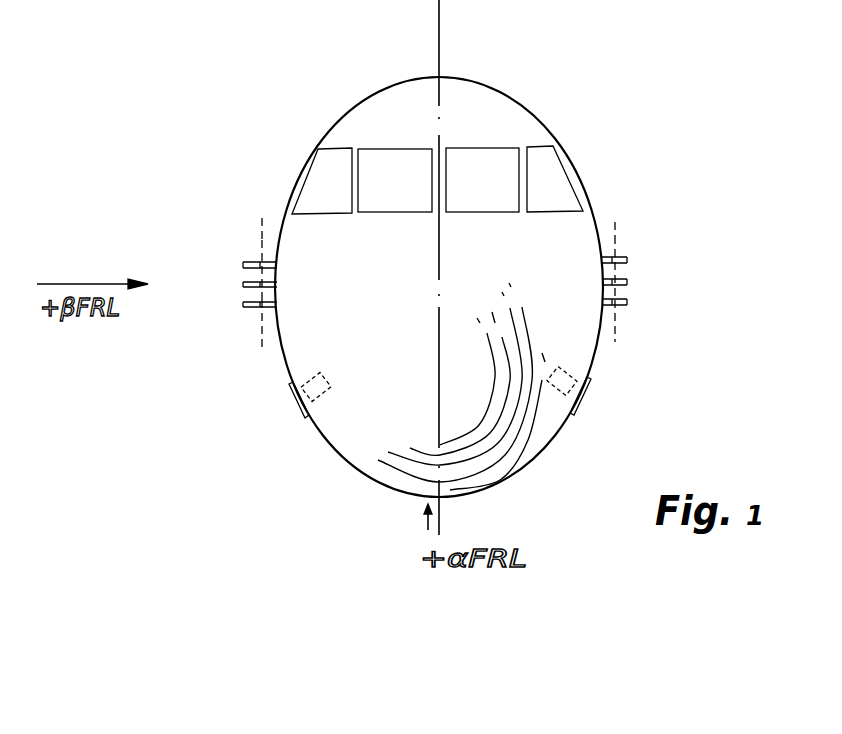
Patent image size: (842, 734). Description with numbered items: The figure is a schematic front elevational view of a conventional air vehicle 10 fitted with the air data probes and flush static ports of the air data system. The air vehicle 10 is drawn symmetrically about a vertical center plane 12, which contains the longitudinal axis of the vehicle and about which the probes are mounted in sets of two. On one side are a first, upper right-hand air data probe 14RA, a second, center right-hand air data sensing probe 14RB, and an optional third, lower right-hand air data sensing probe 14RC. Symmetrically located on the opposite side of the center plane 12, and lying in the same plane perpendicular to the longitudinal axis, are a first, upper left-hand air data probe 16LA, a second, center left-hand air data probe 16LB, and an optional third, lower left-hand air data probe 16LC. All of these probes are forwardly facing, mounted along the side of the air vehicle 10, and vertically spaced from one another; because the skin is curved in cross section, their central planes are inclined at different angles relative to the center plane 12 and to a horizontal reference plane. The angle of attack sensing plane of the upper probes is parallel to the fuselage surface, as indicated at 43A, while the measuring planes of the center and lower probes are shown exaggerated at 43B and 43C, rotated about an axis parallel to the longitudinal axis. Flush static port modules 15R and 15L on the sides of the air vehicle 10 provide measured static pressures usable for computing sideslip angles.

The air vehicle 10 is at (537, 117).
The vertical center plane 12 is at (439, 30).
The first right-hand air data probe 14RA is at (243, 265).
The second right-hand air data sensing probe 14RB is at (245, 284).
The third right-hand air data sensing probe 14RC is at (243, 305).
The first left-hand air data probe 16LA is at (627, 260).
The second left-hand air data probe 16LB is at (627, 282).
The third left-hand air data probe 16LC is at (627, 302).
The angle of attack sensing plane at the A probes 43A is at (262, 231).
The angle of attack measuring plane at the B probes 43B is at (262, 233).
The angle of attack measuring plane at the C probes 43C is at (262, 333).
The right flush static port module 15R is at (309, 415).
The left flush static port module 15L is at (570, 413).